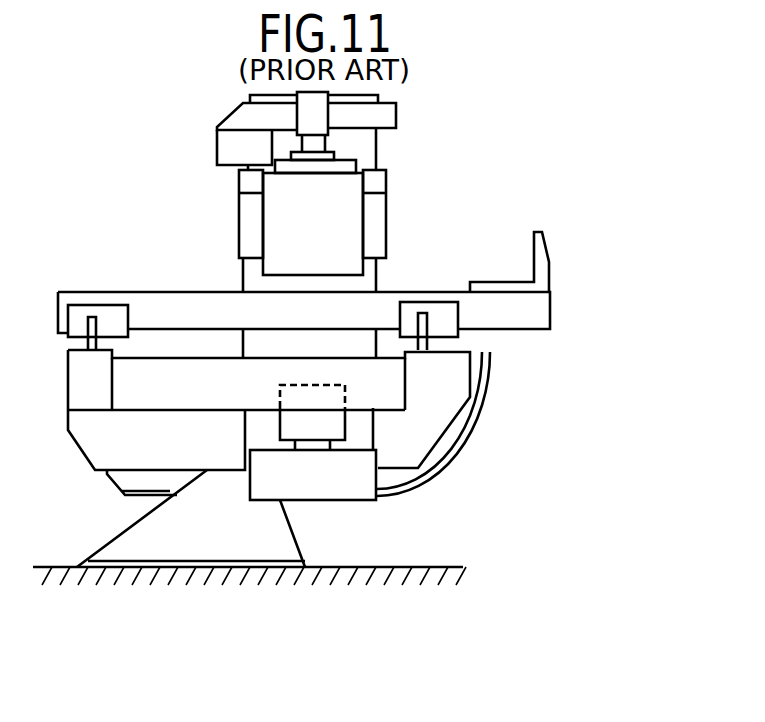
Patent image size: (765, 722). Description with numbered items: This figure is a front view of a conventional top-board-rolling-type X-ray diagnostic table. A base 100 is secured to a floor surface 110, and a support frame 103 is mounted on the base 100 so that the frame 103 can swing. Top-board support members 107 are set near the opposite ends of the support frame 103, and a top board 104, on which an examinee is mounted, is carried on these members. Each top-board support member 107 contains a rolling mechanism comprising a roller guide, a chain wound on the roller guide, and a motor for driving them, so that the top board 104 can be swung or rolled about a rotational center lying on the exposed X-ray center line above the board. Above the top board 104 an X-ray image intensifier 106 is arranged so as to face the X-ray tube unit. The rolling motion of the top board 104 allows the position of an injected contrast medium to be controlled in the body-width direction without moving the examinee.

The base 100 is at (298, 532).
The support frame 103 is at (442, 437).
The top board 104 is at (541, 309).
The X-ray image intensifier 106 is at (348, 218).
The top-board support member 107 is at (112, 312).
The floor surface 110 is at (426, 565).